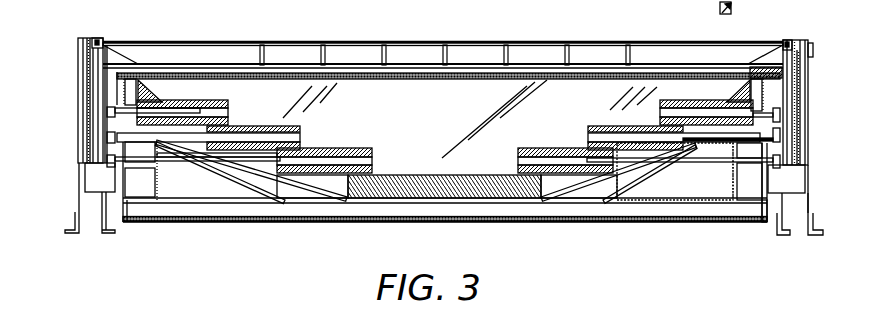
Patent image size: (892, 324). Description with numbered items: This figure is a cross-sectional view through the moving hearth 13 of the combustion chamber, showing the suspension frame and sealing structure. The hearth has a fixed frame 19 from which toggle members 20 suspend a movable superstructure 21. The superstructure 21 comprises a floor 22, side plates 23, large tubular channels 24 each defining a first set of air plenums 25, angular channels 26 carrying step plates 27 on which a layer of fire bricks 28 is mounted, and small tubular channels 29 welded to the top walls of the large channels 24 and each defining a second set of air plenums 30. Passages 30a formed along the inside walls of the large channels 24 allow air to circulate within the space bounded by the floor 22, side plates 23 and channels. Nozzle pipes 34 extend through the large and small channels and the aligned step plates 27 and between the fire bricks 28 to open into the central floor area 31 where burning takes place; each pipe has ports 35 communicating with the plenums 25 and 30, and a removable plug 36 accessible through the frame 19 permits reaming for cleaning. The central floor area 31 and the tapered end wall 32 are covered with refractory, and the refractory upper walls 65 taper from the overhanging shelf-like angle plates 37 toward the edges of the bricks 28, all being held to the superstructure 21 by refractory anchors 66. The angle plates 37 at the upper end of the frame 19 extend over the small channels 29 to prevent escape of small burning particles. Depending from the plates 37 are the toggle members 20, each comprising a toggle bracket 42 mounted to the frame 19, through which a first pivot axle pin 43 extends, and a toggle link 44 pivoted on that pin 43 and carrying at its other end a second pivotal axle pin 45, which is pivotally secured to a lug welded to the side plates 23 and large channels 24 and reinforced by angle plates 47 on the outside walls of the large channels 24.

The hearth 13 is at (395, 30).
The toggle bracket 42 is at (80, 47).
The toggle link 44 is at (86, 72).
The end wall 32 is at (388, 108).
The upper walls 65 is at (738, 70).
The refractory anchors 66 is at (742, 72).
The small tubular channels 29 is at (123, 107).
The fire bricks 28 is at (670, 100).
The second set of air plenums 30 is at (125, 124).
The passages 30a is at (160, 182).
The second pivotal axle pin 45 is at (82, 160).
The removable plug 36 is at (782, 146).
The angle plates 47 is at (100, 178).
The side plates 23 is at (123, 208).
The fixed frame 19 is at (810, 208).
The first set of air plenums 25 is at (158, 168).
The ports 35 is at (738, 198).
The large tubular channels 24 is at (728, 168).
The central floor area 31 is at (432, 172).
The angular channels 26 is at (257, 192).
The step plates 27 is at (576, 172).
The nozzle pipes 34 is at (662, 192).
The floor 22 is at (376, 224).
The movable superstructure 21 is at (745, 223).
The toggle members 20 is at (814, 116).
The shelf-like angle plates 37 is at (790, 44).
The first pivot axle pin 43 is at (813, 53).